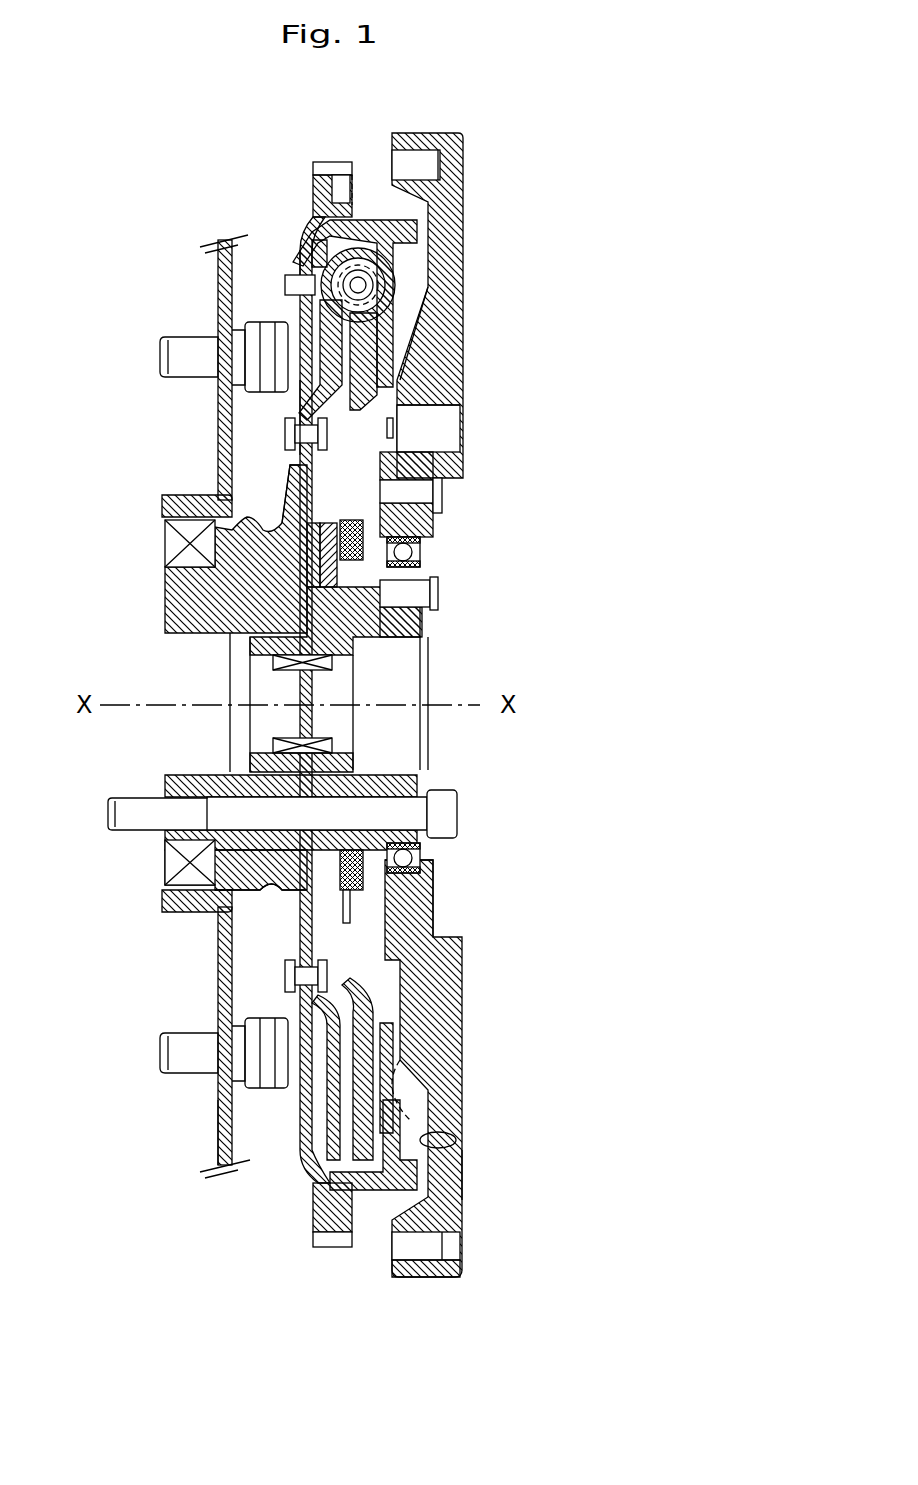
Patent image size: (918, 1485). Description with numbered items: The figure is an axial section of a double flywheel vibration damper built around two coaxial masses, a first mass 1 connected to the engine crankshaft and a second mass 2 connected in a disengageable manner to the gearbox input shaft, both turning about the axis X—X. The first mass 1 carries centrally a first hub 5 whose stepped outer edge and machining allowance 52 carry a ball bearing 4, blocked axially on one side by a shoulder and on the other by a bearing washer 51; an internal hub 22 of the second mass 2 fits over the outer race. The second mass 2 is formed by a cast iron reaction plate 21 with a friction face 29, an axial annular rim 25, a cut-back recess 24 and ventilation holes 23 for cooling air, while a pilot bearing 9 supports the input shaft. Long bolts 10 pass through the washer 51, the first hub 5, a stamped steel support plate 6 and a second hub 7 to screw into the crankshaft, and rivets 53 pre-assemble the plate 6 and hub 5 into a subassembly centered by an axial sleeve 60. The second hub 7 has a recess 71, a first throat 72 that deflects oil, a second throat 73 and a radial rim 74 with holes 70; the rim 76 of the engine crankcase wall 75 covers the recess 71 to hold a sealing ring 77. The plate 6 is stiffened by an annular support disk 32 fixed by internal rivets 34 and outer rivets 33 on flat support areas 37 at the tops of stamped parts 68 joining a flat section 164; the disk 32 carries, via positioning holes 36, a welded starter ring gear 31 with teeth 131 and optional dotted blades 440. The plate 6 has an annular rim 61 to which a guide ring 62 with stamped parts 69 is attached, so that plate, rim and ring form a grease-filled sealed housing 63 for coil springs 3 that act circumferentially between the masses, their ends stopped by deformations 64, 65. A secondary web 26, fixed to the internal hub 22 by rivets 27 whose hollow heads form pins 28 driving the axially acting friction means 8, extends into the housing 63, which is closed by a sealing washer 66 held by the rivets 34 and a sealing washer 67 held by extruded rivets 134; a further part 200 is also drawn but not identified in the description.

The first mass 1 is at (162, 862).
The second mass 2 is at (466, 228).
The elastic parts 3 is at (397, 283).
The bearing means 4 is at (410, 548).
The first hub 5 is at (400, 638).
The support plate 6 is at (335, 630).
The second hub 7 is at (162, 790).
The friction means 8 is at (365, 893).
The pilot bearing 9 is at (332, 660).
The fastening parts 10 is at (458, 815).
The reaction plate 21 is at (445, 1012).
The internal hub 22 is at (415, 925).
The ventilation holes 23 is at (400, 418).
The recess 24 is at (456, 1138).
The annular rim 25 is at (420, 1277).
The secondary metal web 26 is at (328, 976).
The rivets 27 is at (444, 494).
The pin 28 is at (412, 462).
The friction face 29 is at (463, 1170).
The starter ring gear 31 is at (313, 192).
The support disk 32 is at (312, 308).
The rivets 33 is at (287, 283).
The rivets 34 is at (285, 432).
The holes 36 is at (300, 235).
The flat support areas 37 is at (292, 265).
The bearing washer 51 is at (332, 805).
The machining allowance 52 is at (420, 567).
The rivets 53 is at (440, 595).
The axial sleeve 60 is at (258, 652).
The annular rim 61 is at (382, 222).
The guide ring 62 is at (400, 1040).
The annular housing 63 is at (318, 1192).
The deformations 64 is at (305, 1170).
The deformations 65 is at (392, 1080).
The sealing washer 66 is at (298, 402).
The sealing washer 67 is at (378, 392).
The stamped parts 68 is at (248, 338).
The stamped parts 69 is at (402, 305).
The holes 70 is at (290, 480).
The recess 71 is at (240, 580).
The first throat 72 is at (210, 518).
The second throat 73 is at (218, 492).
The rim 74 is at (298, 458).
The engine crankcase wall 75 is at (222, 960).
The rim 76 is at (215, 892).
The sealing ring 77 is at (195, 545).
The set of teeth 131 is at (318, 162).
The rivets 134 is at (393, 428).
The flat section 164 is at (225, 1120).
The bolt 200 is at (160, 1053).
The blades 440 is at (350, 175).